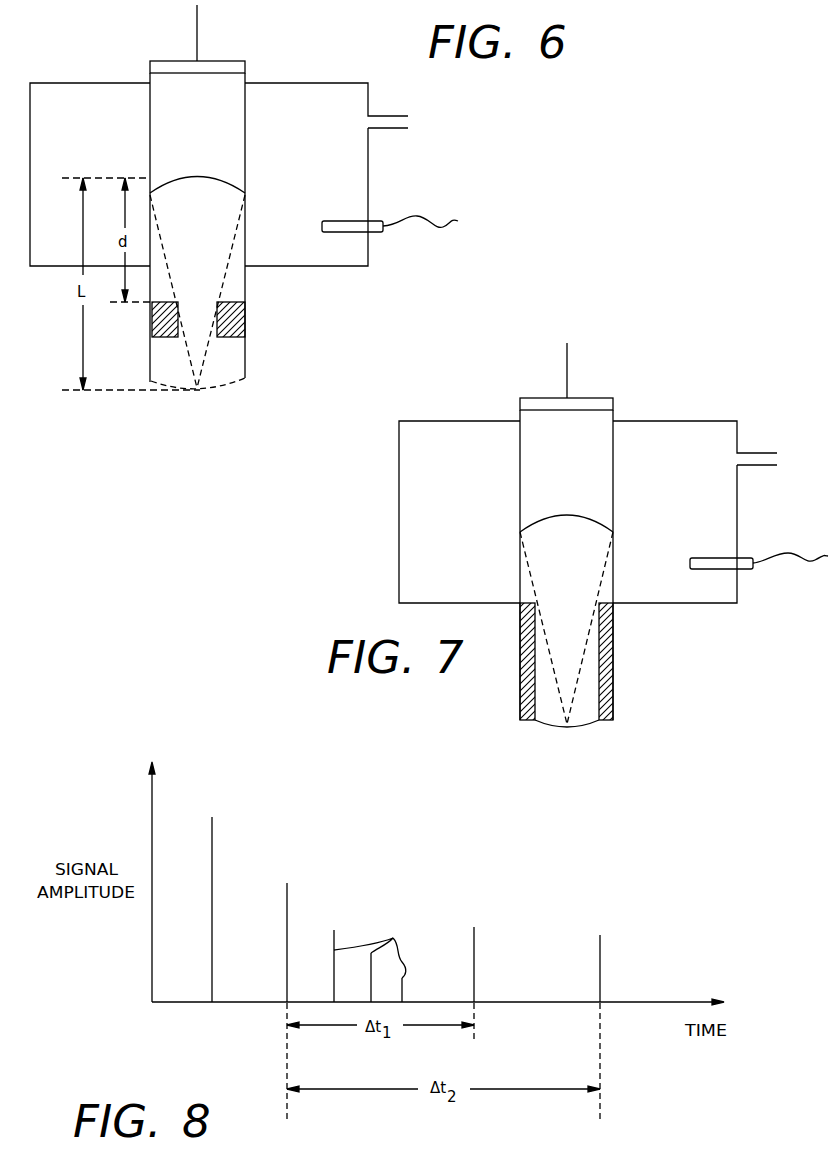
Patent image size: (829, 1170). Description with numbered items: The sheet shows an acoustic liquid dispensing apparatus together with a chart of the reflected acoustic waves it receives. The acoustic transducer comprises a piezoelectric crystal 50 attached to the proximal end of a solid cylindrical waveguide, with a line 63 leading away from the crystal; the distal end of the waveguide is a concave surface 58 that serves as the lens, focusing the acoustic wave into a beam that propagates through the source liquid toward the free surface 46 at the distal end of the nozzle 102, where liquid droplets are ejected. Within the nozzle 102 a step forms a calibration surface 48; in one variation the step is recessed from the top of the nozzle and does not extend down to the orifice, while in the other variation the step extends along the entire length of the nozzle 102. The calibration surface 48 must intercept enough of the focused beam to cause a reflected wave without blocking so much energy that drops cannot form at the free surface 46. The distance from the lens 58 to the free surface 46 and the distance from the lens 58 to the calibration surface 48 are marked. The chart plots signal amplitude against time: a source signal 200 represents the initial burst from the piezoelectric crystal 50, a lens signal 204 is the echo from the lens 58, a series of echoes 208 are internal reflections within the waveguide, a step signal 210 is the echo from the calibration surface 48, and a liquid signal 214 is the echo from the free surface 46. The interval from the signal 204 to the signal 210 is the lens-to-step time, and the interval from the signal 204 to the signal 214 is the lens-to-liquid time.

In FIG. 6, the signal cable 63 is at (197, 30).
In FIG. 7, the signal cable 63 is at (567, 370).
In FIG. 6, the piezoelectric crystal 50 is at (245, 68).
In FIG. 6, the concave surface 58 is at (232, 182).
In FIG. 6, the calibration surface 48 is at (165, 300).
In FIG. 7, the calibration surface 48 is at (527, 603).
In FIG. 6, the nozzle 102 is at (247, 361).
In FIG. 7, the nozzle 102 is at (615, 700).
In FIG. 6, the free surface 46 is at (218, 392).
In FIG. 8, the source signal 200 is at (212, 842).
In FIG. 8, the lens signal 204 is at (287, 900).
In FIG. 8, the echoes 208 is at (387, 954).
In FIG. 8, the step signal 210 is at (474, 957).
In FIG. 8, the liquid signal 214 is at (600, 967).